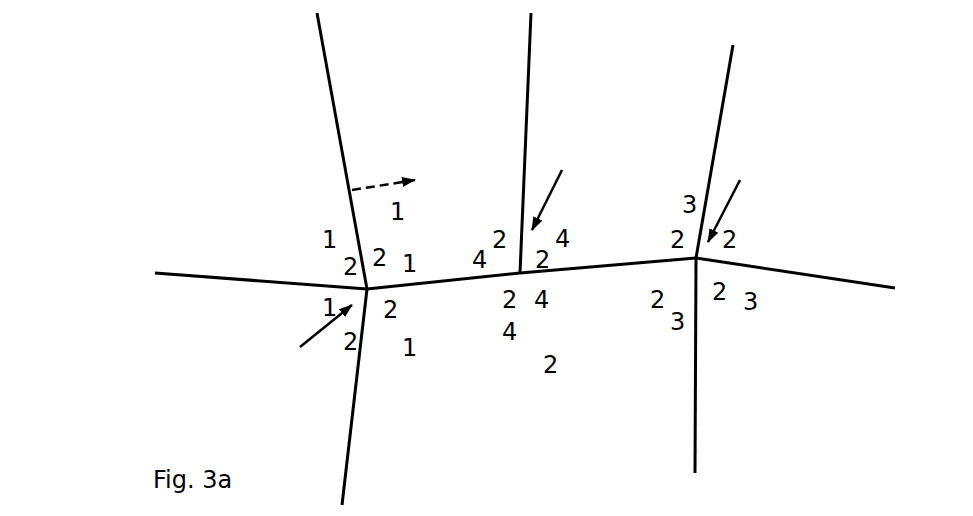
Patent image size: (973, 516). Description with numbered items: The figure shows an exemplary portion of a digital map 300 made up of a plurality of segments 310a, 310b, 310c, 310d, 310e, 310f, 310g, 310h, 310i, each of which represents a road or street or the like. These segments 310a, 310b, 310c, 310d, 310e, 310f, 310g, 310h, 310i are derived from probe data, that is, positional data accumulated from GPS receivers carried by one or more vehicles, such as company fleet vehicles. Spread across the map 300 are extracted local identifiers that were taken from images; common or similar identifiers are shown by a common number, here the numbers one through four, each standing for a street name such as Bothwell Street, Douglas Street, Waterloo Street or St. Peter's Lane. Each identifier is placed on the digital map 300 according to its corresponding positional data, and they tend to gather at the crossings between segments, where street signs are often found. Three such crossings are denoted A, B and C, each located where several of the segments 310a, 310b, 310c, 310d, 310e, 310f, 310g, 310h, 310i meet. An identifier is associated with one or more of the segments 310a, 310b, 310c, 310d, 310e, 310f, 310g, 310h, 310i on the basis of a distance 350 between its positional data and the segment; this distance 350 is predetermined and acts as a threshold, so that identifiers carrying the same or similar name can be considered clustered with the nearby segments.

The digital map 300 is at (207, 75).
The segment 310a is at (261, 260).
The segment 310b is at (361, 151).
The segment 310c is at (379, 397).
The segment 310d is at (443, 293).
The segment 310e is at (573, 143).
The segment 310f is at (608, 285).
The segment 310g is at (755, 151).
The segment 310h is at (802, 254).
The segment 310i is at (739, 365).
The distance 350 is at (383, 180).
The crossing A is at (300, 357).
The crossing B is at (571, 164).
The crossing C is at (760, 176).